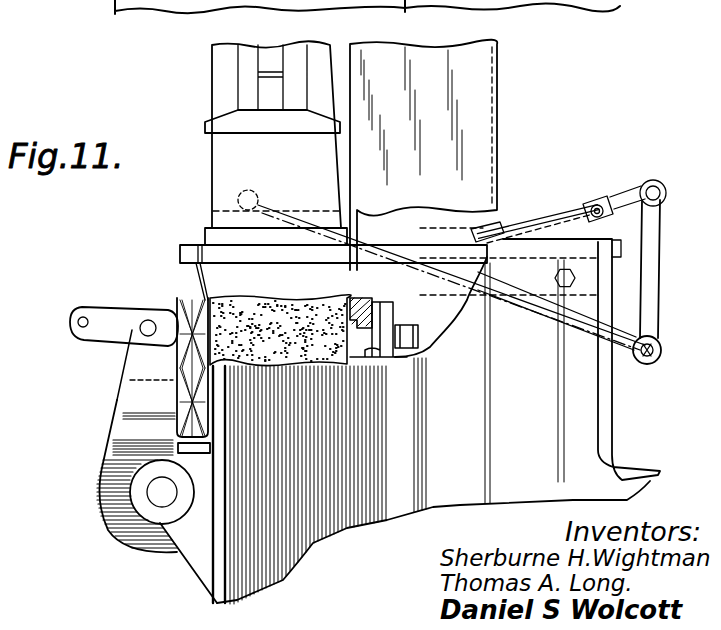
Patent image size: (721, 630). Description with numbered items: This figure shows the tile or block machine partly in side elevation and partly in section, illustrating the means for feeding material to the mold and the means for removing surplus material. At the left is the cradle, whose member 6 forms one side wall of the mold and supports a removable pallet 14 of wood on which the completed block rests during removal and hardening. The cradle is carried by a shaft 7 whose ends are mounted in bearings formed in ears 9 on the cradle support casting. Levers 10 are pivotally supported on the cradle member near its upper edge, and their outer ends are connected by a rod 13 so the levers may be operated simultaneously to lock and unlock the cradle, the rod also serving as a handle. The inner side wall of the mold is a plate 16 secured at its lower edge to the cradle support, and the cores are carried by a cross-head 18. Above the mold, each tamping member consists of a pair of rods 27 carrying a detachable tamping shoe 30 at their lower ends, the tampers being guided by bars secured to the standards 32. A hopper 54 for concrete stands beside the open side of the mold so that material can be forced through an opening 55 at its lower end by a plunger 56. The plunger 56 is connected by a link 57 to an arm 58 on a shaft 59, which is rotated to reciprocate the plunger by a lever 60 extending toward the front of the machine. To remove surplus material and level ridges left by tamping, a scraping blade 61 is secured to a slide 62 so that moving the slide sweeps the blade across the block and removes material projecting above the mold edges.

The cradle member 6 is at (127, 408).
The shaft 7 is at (158, 500).
The ears 9 is at (188, 560).
The levers 10 is at (108, 322).
The rod 13 is at (143, 322).
The removable pallet 14 is at (180, 358).
The plate 16 is at (350, 297).
The cross-head 18 is at (387, 347).
The rods 27 is at (288, 58).
The tamping shoe 30 is at (265, 125).
The standards 32 is at (233, 171).
The hopper 54 is at (498, 127).
The opening 55 is at (398, 273).
The plunger 56 is at (542, 209).
The link 57 is at (638, 190).
The arm 58 is at (655, 253).
The shaft 59 is at (661, 345).
The lever 60 is at (537, 323).
The scraping blade 61 is at (200, 279).
The slide 62 is at (185, 245).